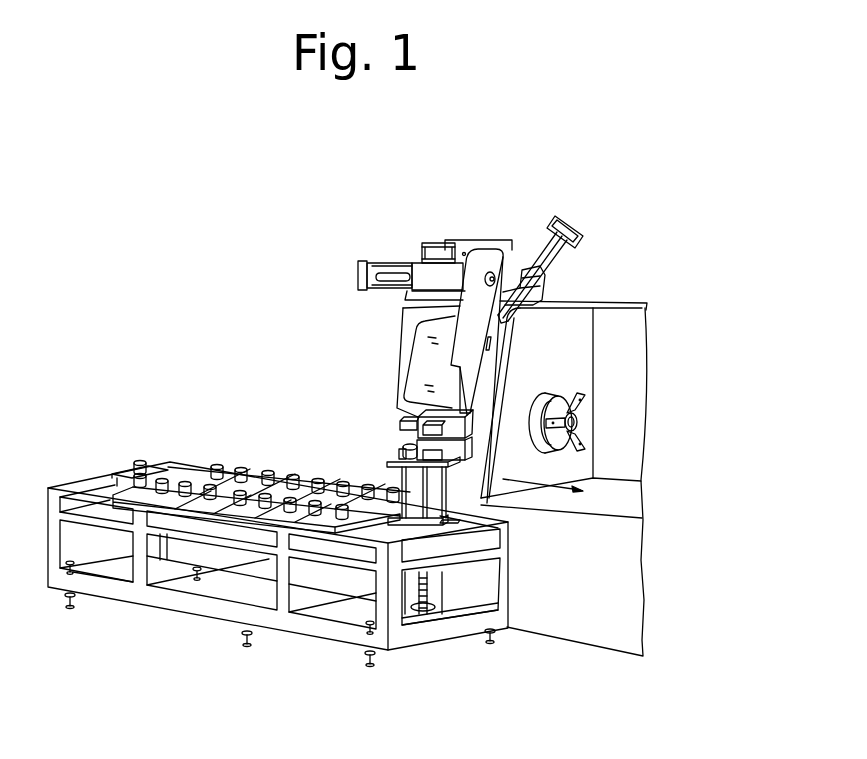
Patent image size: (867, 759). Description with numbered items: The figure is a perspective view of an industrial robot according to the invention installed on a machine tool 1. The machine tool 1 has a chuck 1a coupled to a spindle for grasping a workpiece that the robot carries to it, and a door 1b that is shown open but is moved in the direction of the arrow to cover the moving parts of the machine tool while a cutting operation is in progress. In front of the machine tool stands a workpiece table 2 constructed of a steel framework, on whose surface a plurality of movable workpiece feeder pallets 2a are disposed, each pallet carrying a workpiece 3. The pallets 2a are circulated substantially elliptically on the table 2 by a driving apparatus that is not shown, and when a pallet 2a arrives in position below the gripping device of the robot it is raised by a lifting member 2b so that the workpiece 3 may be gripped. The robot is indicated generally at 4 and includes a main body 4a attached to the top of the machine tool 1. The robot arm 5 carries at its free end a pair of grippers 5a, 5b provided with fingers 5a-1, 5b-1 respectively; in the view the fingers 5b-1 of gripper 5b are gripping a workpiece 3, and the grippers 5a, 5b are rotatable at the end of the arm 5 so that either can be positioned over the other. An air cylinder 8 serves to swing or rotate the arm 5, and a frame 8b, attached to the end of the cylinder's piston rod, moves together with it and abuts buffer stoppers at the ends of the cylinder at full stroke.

The machine tool 1 is at (620, 554).
The chuck 1a is at (584, 418).
The door 1b is at (422, 362).
The workpiece table 2 is at (394, 627).
The workpiece feeder pallet 2a is at (333, 507).
The lifting member 2b is at (455, 505).
The workpiece 3 is at (340, 504).
The industrial robot 4 is at (469, 240).
The main body 4a is at (424, 280).
The robot arm 5 is at (463, 325).
The gripper 5a is at (463, 415).
The fingers 5a-1 is at (402, 422).
The gripper 5b is at (415, 440).
The fingers 5b-1 is at (405, 450).
The air cylinder 8 is at (564, 244).
The frame 8b is at (538, 289).